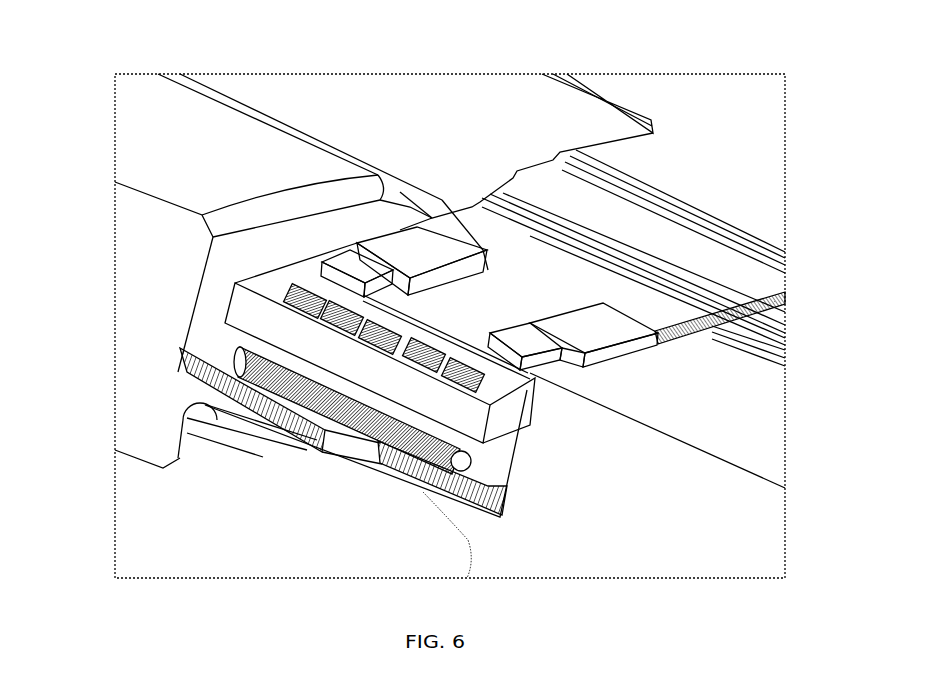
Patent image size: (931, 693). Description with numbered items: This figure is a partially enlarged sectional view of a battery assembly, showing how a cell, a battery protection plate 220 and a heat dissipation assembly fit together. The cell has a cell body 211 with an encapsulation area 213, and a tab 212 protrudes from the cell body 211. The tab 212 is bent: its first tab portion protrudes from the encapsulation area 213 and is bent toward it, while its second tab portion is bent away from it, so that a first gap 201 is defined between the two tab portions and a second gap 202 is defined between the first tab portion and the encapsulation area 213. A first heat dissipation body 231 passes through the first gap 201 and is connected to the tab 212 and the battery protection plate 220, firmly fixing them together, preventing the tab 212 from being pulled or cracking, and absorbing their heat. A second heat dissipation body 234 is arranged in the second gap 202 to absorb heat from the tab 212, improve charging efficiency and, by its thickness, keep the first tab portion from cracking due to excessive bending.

The cell body 211 is at (150, 100).
The battery protection plate 220 is at (590, 74).
The first gap 201 is at (220, 340).
The tab 212 is at (180, 350).
The encapsulation area 213 is at (182, 460).
The second gap 202 is at (305, 447).
The first heat dissipation body 231 is at (318, 453).
The second heat dissipation body 234 is at (203, 383).